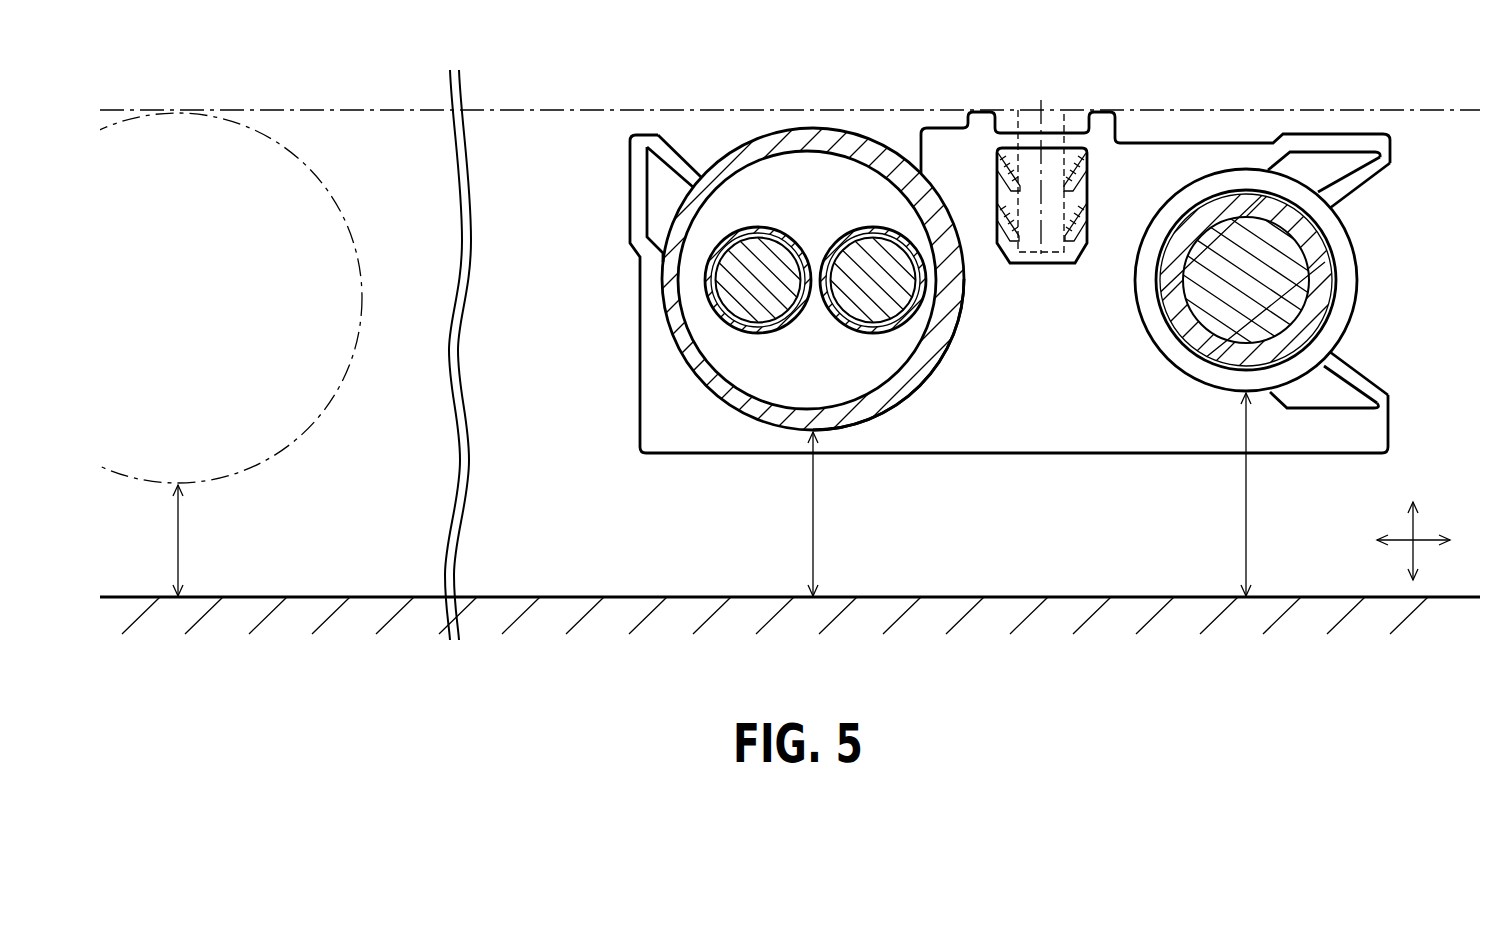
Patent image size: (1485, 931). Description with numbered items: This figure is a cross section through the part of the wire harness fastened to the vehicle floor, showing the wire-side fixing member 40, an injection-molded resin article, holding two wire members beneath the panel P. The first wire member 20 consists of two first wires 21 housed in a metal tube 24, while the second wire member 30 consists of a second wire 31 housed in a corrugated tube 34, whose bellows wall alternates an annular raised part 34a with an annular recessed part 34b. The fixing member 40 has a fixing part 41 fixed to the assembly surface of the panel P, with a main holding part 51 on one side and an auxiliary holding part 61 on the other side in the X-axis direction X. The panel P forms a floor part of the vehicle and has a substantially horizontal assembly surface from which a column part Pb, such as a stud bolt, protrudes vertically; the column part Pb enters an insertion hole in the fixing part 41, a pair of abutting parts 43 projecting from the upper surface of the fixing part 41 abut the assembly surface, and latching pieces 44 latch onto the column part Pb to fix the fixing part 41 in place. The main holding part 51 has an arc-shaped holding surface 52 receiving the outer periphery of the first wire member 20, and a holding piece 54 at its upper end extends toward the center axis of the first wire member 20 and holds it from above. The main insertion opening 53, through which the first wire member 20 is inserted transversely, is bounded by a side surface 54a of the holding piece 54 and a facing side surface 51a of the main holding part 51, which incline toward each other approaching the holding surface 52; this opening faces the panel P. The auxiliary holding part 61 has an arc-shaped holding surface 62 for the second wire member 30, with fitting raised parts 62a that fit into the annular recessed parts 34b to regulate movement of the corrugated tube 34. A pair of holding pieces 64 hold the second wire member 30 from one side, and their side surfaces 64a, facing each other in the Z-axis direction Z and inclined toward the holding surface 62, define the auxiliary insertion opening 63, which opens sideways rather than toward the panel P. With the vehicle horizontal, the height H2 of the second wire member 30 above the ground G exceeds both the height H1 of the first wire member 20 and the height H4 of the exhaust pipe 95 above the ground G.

The first wire member 20 is at (813, 250).
The first wires 21 is at (773, 226).
The metal tube 24 is at (801, 128).
The second wire member 30 is at (1254, 251).
The second wire 31 is at (1208, 358).
The corrugated tube 34 is at (1240, 220).
The annular raised part 34a is at (1348, 247).
The annular recessed part 34b is at (1338, 275).
The wire-side fixing member 40 is at (1169, 141).
The fixing part 41 is at (1004, 134).
The abutting parts 43 is at (982, 120).
The latching pieces 44 is at (996, 177).
The main holding part 51 is at (754, 456).
The side surface of main holding part 51a is at (916, 137).
The holding surface 52 is at (947, 343).
The main insertion opening 53 is at (689, 151).
The holding piece 54 is at (657, 165).
The side surface of holding piece 54a is at (685, 161).
The auxiliary holding part 61 is at (1205, 456).
The holding surface 62 is at (1225, 280).
The fitting raised parts 62a is at (1162, 223).
The auxiliary insertion opening 63 is at (1345, 357).
The holding pieces 64 is at (1355, 277).
The side surfaces of holding pieces 64a is at (1342, 200).
The exhaust pipe 95 is at (275, 457).
The panel P is at (497, 113).
The column part Pb is at (1042, 254).
The ground G is at (629, 597).
The height of first wire member H1 is at (838, 514).
The height of second wire member H2 is at (1270, 494).
The height of exhaust pipe H4 is at (202, 540).
The Z-axis direction Z is at (1414, 522).
The X-axis direction X is at (1425, 540).